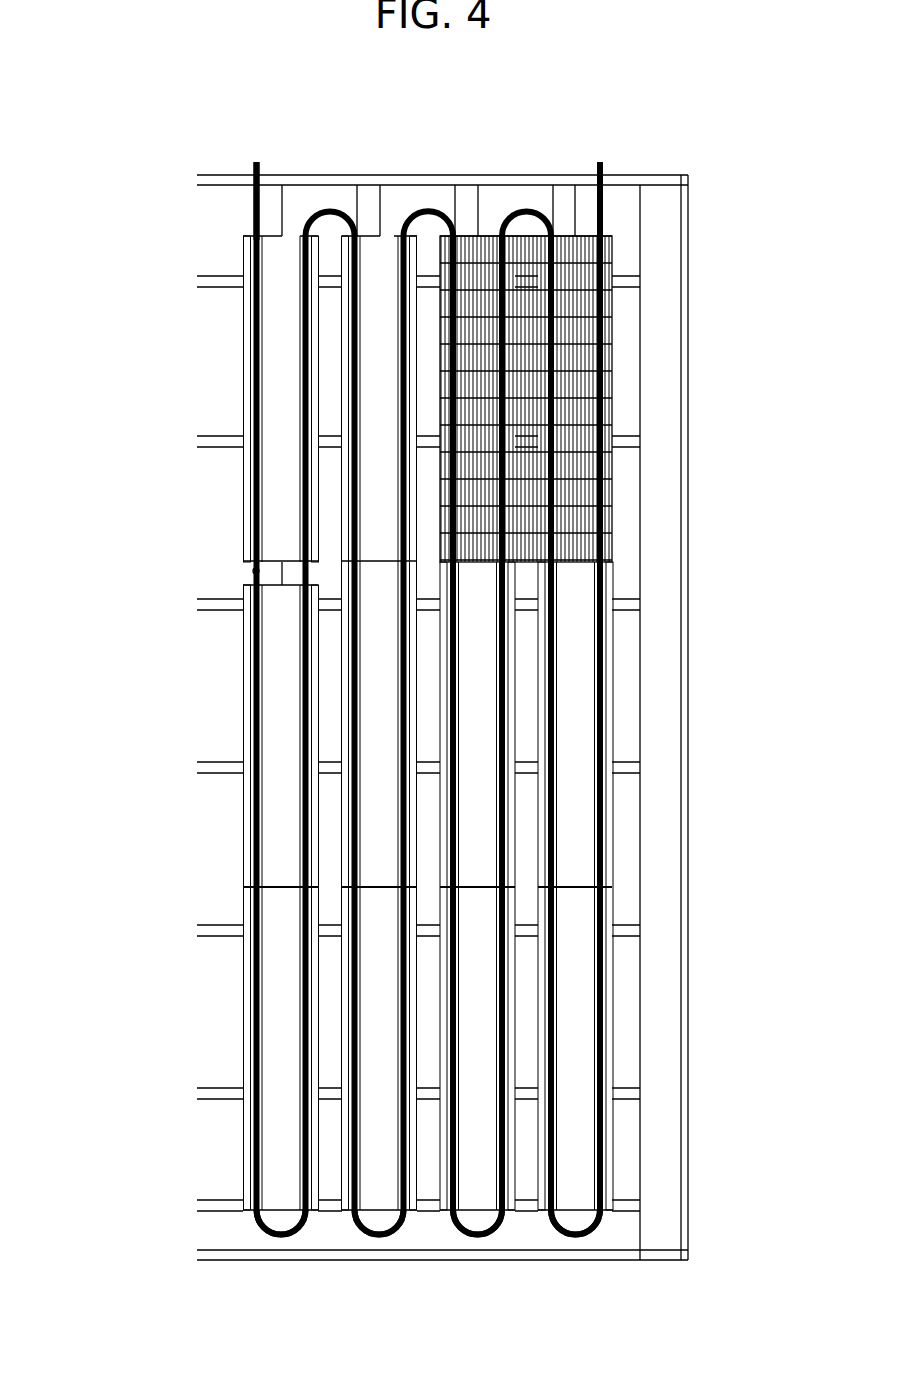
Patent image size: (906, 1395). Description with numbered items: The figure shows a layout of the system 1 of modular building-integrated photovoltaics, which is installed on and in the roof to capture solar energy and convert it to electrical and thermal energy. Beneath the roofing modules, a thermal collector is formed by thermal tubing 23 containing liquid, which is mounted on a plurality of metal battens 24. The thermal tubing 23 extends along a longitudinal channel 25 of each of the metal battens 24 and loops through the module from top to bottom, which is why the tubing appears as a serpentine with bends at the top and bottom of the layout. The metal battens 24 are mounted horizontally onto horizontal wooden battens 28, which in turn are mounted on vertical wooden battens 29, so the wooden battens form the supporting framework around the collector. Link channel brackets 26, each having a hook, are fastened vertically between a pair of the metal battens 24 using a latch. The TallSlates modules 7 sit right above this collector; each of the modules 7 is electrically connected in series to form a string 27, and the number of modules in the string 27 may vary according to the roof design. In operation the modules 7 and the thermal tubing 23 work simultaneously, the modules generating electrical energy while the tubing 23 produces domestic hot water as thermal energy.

The system 1 is at (125, 741).
The TallSlates module 7 is at (507, 300).
The thermal tubing 23 is at (463, 1235).
The metal battens 24 is at (285, 1185).
The longitudinal channel 25 is at (247, 1165).
The link channel brackets 26 is at (403, 318).
The string 27 is at (610, 347).
The horizontal wooden battens 28 is at (372, 183).
The vertical wooden battens 29 is at (220, 280).